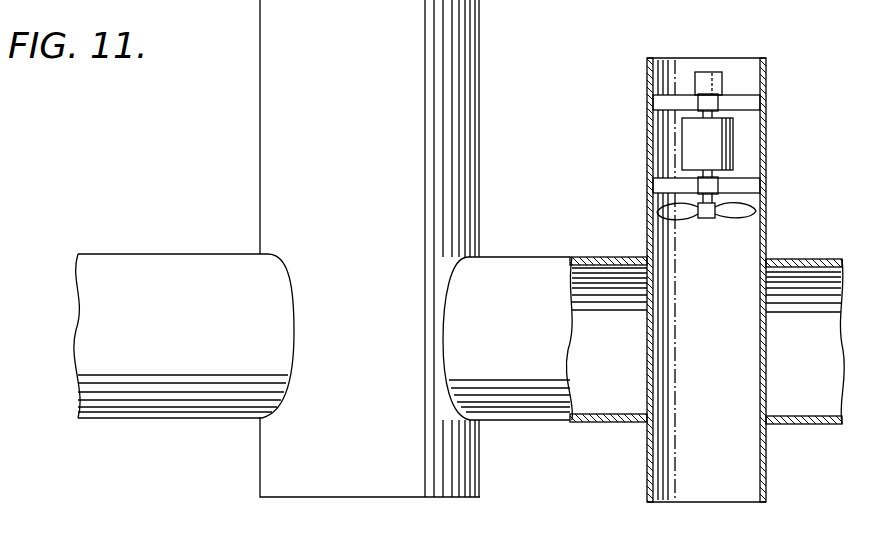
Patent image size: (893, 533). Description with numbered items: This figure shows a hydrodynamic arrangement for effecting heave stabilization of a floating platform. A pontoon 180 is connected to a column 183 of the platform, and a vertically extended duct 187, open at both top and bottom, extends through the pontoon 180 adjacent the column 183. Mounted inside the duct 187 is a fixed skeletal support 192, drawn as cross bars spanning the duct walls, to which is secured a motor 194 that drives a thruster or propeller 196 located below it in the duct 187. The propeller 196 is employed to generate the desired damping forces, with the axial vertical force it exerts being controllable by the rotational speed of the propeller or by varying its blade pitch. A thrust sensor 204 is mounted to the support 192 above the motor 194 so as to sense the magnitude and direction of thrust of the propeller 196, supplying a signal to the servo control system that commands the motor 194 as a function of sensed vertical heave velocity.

The pontoon 180 is at (167, 254).
The column 183 is at (264, 144).
The duct 187 is at (745, 468).
The fixed skeletal support 192 is at (747, 97).
The motor 194 is at (733, 140).
The propeller 196 is at (748, 214).
The thrust sensor 204 is at (713, 73).